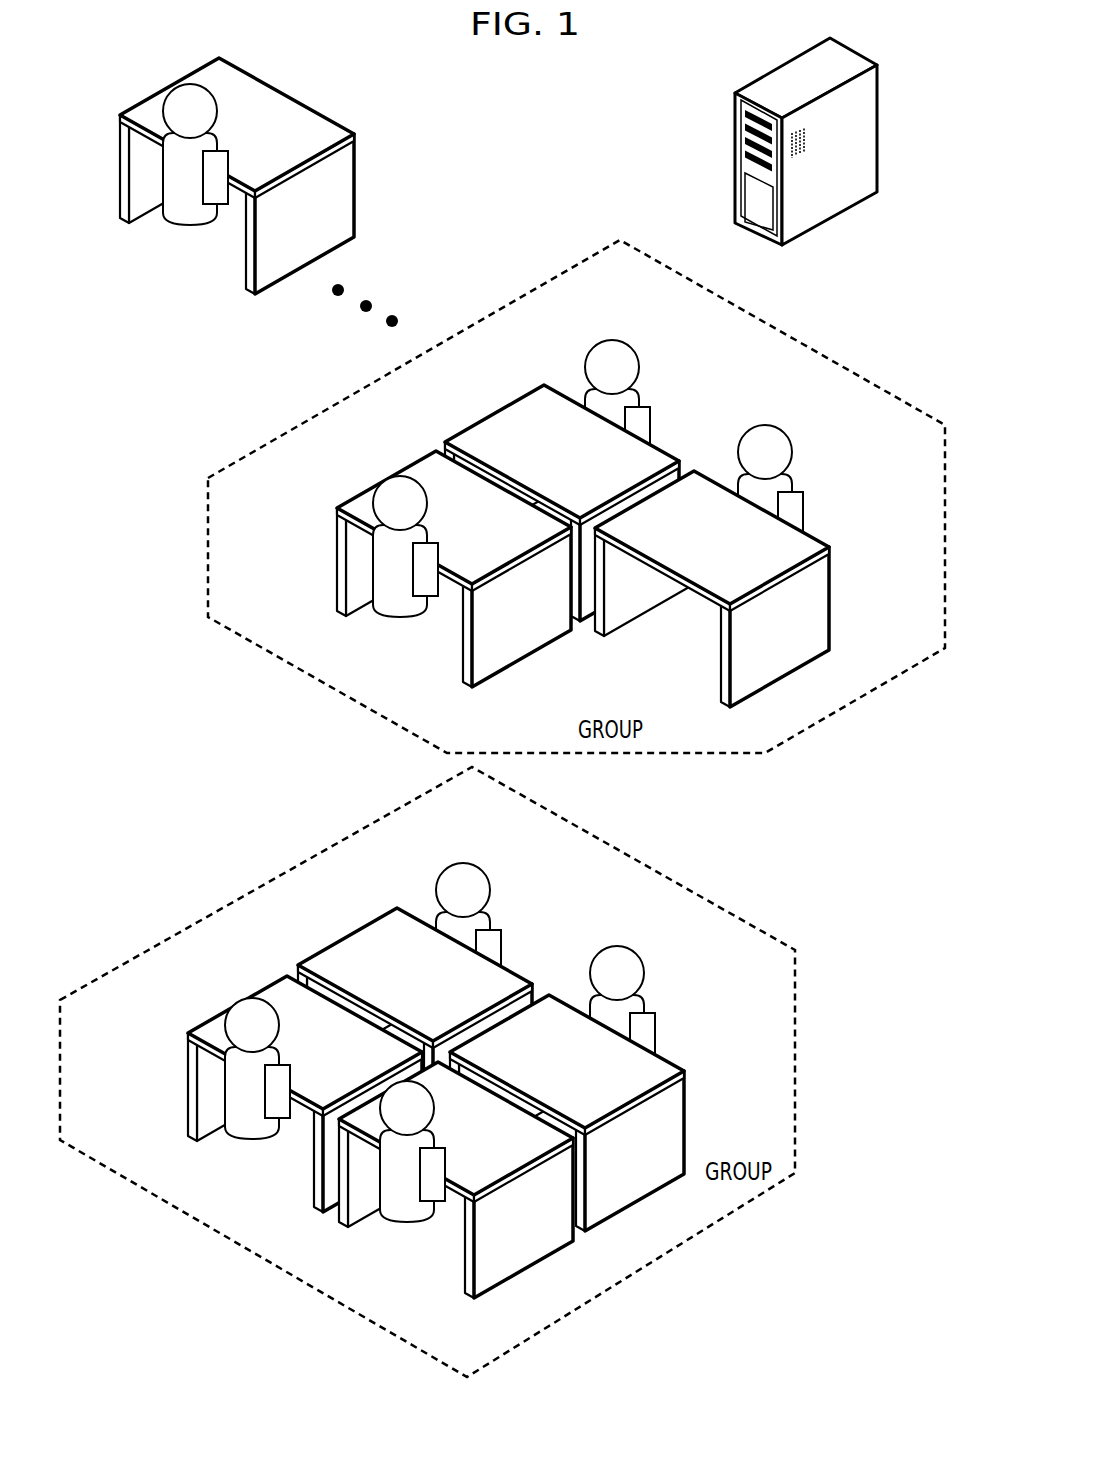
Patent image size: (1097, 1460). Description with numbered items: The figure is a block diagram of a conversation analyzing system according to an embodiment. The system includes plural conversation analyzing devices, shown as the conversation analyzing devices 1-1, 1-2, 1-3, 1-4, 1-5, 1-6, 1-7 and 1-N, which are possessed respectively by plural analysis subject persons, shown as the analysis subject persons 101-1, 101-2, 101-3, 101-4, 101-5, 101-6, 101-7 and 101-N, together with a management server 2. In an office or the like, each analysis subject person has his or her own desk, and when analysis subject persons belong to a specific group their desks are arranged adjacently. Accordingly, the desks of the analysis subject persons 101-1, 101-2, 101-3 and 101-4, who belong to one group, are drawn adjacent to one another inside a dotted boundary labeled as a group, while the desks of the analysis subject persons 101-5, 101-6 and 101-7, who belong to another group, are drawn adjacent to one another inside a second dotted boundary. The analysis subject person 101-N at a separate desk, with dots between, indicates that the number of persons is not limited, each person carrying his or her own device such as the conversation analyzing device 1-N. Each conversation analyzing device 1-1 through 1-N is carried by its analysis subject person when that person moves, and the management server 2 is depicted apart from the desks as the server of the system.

The management server 2 is at (857, 115).
The analysis subject person 101-N is at (185, 92).
The conversation analyzing device 1-N is at (218, 167).
The analysis subject person 101-7 is at (625, 370).
The conversation analyzing device 1-7 is at (638, 428).
The analysis subject person 101-6 is at (778, 453).
The conversation analyzing device 1-6 is at (798, 515).
The analysis subject person 101-5 is at (388, 608).
The conversation analyzing device 1-5 is at (423, 587).
The analysis subject person 101-4 is at (478, 893).
The conversation analyzing device 1-4 is at (488, 950).
The analysis subject person 101-3 is at (630, 978).
The conversation analyzing device 1-3 is at (650, 1038).
The analysis subject person 101-1 is at (227, 1140).
The conversation analyzing device 1-1 is at (277, 1112).
The analysis subject person 101-2 is at (398, 1218).
The conversation analyzing device 1-2 is at (430, 1195).